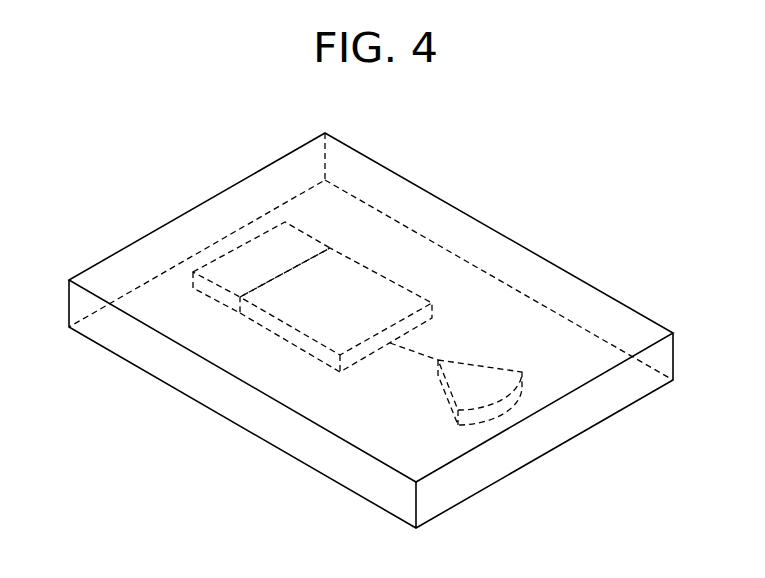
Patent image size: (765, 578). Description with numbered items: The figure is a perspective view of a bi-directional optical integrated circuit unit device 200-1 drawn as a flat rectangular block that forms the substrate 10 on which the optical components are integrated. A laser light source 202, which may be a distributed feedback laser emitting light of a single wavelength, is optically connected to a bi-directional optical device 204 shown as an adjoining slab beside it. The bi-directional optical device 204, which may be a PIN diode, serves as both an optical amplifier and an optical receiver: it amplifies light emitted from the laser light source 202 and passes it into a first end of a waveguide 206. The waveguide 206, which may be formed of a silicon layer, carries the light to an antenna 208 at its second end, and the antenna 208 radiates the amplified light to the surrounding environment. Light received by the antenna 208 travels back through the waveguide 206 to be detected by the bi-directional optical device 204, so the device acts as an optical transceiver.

The bi-directional optical integrated circuit unit device 200-1 is at (630, 173).
The substrate 10 is at (573, 423).
The laser light source 202 is at (303, 237).
The bi-directional optical device 204 is at (375, 277).
The waveguide 206 is at (418, 356).
The antenna 208 is at (497, 373).